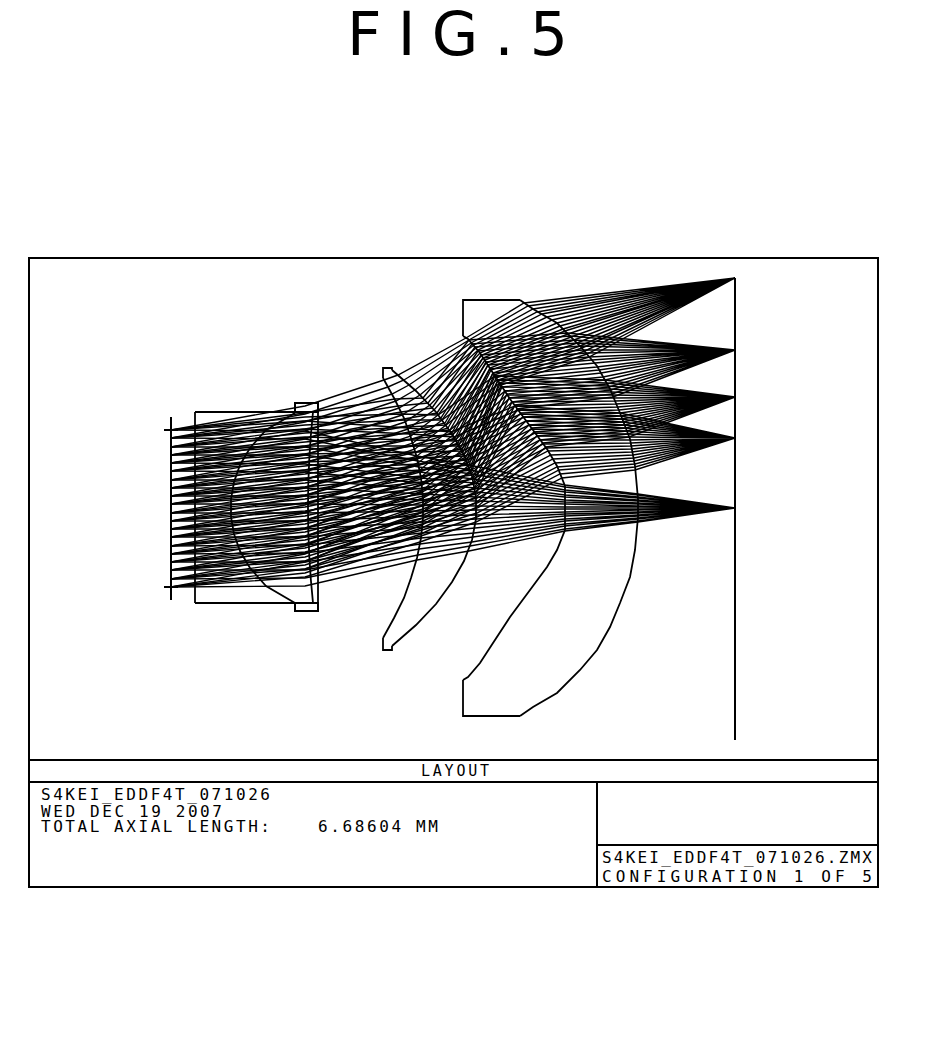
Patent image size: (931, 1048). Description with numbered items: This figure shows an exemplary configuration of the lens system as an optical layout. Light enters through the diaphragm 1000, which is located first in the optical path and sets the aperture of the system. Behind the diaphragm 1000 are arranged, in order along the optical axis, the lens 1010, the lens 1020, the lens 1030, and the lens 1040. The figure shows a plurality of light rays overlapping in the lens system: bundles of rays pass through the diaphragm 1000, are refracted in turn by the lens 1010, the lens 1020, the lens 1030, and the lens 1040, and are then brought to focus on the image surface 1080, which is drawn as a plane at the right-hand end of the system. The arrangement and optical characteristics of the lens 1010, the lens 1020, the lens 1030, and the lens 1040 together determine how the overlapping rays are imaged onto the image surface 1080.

The diaphragm 1000 is at (171, 425).
The lens 1010 is at (235, 411).
The lens 1020 is at (308, 404).
The lens 1030 is at (388, 367).
The lens 1040 is at (495, 300).
The image surface 1080 is at (736, 308).